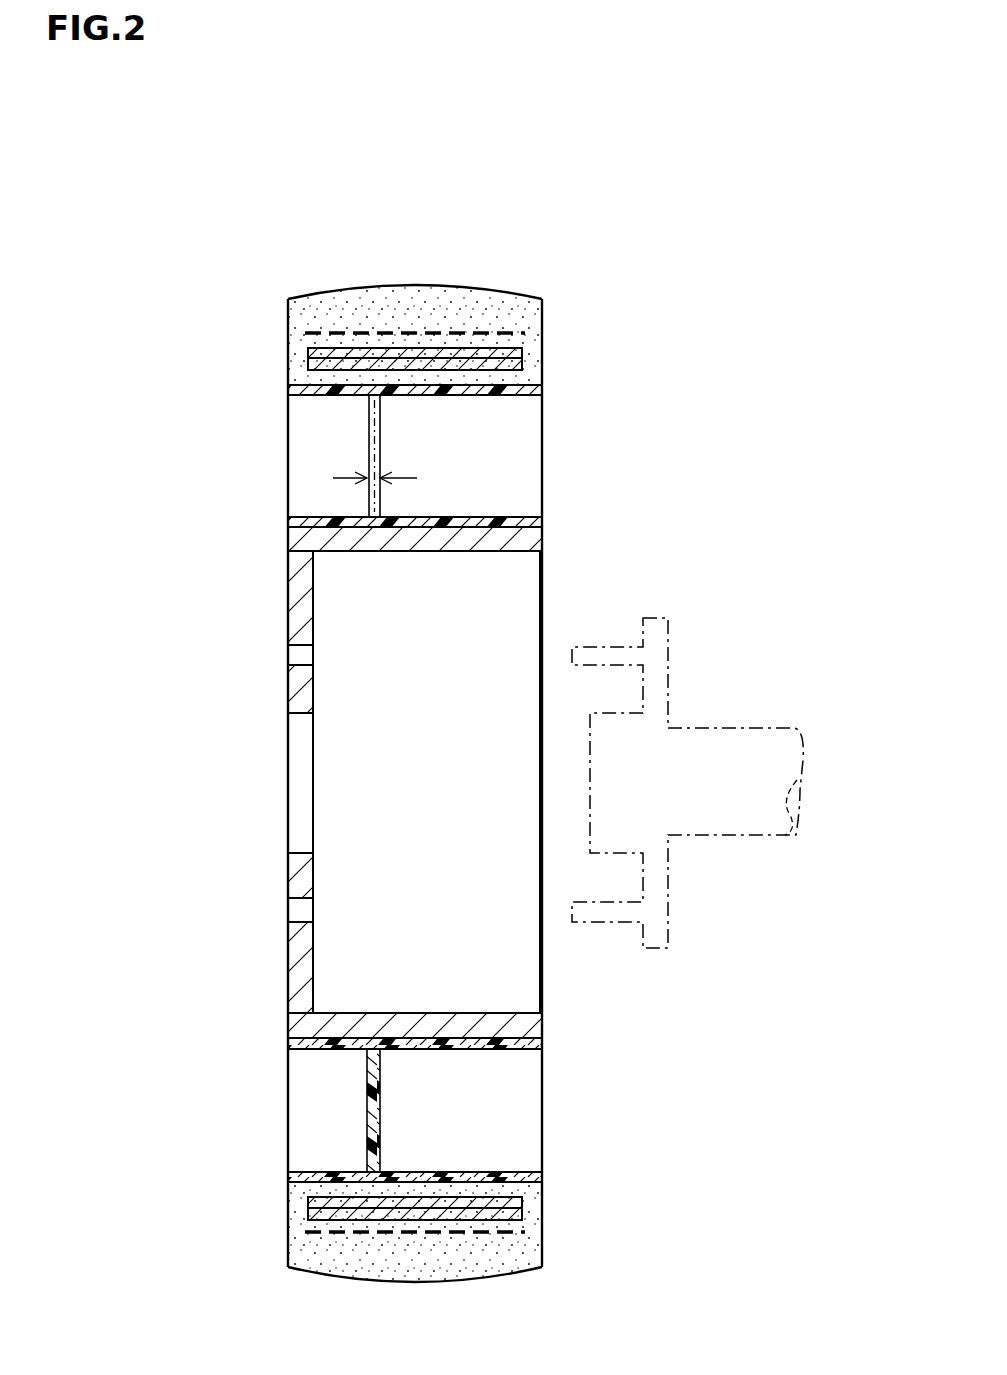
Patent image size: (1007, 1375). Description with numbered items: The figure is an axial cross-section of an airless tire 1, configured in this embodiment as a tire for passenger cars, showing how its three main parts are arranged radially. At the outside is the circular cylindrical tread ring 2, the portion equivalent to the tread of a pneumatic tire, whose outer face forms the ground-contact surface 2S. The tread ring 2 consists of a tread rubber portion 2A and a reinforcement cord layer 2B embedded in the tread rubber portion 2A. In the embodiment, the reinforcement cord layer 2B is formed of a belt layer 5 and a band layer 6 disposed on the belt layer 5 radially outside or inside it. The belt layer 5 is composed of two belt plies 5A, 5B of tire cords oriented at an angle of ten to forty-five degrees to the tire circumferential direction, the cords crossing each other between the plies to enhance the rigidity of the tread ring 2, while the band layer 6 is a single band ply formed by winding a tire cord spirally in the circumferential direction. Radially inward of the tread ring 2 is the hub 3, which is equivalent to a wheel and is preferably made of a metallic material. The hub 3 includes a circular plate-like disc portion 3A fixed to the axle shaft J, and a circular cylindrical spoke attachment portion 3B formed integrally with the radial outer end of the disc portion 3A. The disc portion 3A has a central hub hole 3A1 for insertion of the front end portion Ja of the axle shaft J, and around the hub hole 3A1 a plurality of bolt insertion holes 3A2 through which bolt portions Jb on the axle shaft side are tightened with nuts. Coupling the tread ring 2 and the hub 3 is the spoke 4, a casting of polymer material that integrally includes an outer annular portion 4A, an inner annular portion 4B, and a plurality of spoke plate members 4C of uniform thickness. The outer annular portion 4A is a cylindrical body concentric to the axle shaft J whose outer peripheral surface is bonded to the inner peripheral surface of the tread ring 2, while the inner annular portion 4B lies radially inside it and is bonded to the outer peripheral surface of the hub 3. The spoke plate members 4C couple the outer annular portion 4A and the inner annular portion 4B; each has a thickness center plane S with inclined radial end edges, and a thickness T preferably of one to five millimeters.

The airless tire 1 is at (540, 232).
The tread ring 2 is at (501, 707).
The tread rubber portion 2A is at (432, 300).
The reinforcement cord layer 2B is at (563, 732).
The ground-contact surface 2S is at (377, 286).
The hub 3 is at (304, 854).
The disc portion 3A is at (325, 793).
The hub hole 3A1 is at (302, 715).
The bolt insertion holes 3A2 is at (303, 900).
The spoke attachment portion 3B is at (452, 1013).
The spoke 4 is at (355, 466).
The outer annular portion 4A is at (335, 394).
The inner annular portion 4B is at (335, 517).
The spoke plate members 4C is at (345, 450).
The belt layer 5 is at (524, 762).
The belt ply 5A is at (500, 368).
The belt ply 5B is at (505, 354).
The band layer 6 is at (482, 332).
The thickness center plane S is at (377, 412).
The thickness T is at (380, 483).
The axle shaft J is at (687, 817).
The front end portion Ja is at (608, 855).
The bolt portions Jb is at (618, 922).